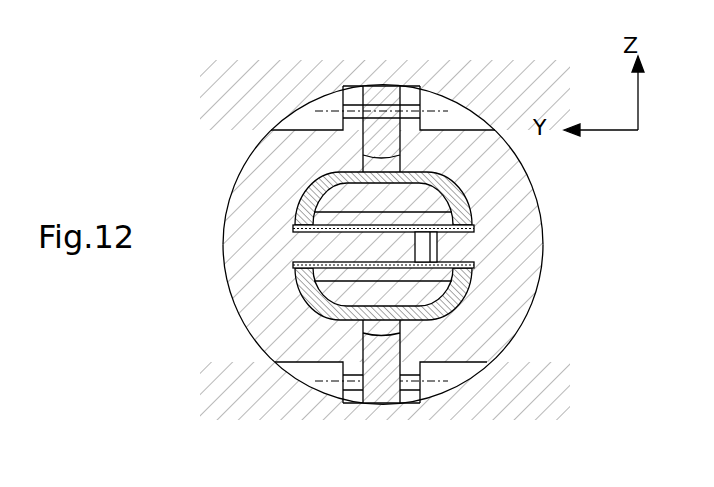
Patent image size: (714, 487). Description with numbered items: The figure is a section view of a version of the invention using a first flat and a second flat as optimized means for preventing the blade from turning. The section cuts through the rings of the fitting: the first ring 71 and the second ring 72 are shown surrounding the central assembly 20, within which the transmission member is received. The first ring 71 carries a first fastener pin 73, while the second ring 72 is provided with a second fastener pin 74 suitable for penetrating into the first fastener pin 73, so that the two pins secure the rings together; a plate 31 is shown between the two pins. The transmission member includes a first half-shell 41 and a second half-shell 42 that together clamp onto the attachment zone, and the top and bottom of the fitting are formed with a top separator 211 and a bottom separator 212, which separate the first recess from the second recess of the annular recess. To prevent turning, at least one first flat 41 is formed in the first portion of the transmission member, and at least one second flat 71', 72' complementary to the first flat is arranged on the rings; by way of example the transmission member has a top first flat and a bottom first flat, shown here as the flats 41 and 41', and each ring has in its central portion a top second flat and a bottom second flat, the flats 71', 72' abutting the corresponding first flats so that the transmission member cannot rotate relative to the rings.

The insert assembly 20 is at (387, 246).
The plate 31 is at (298, 269).
The first flat 41 is at (507, 348).
The lower left flange 41' is at (285, 384).
The second half-shell 42 is at (340, 325).
The first ring 71 is at (424, 317).
The second flat 71' is at (477, 241).
The second ring 72 is at (351, 165).
The second flat 72' is at (261, 125).
The first fastener pin 73 is at (427, 246).
The second fastener pin 74 is at (357, 250).
The top separator 211 is at (382, 94).
The bottom separator 212 is at (386, 357).